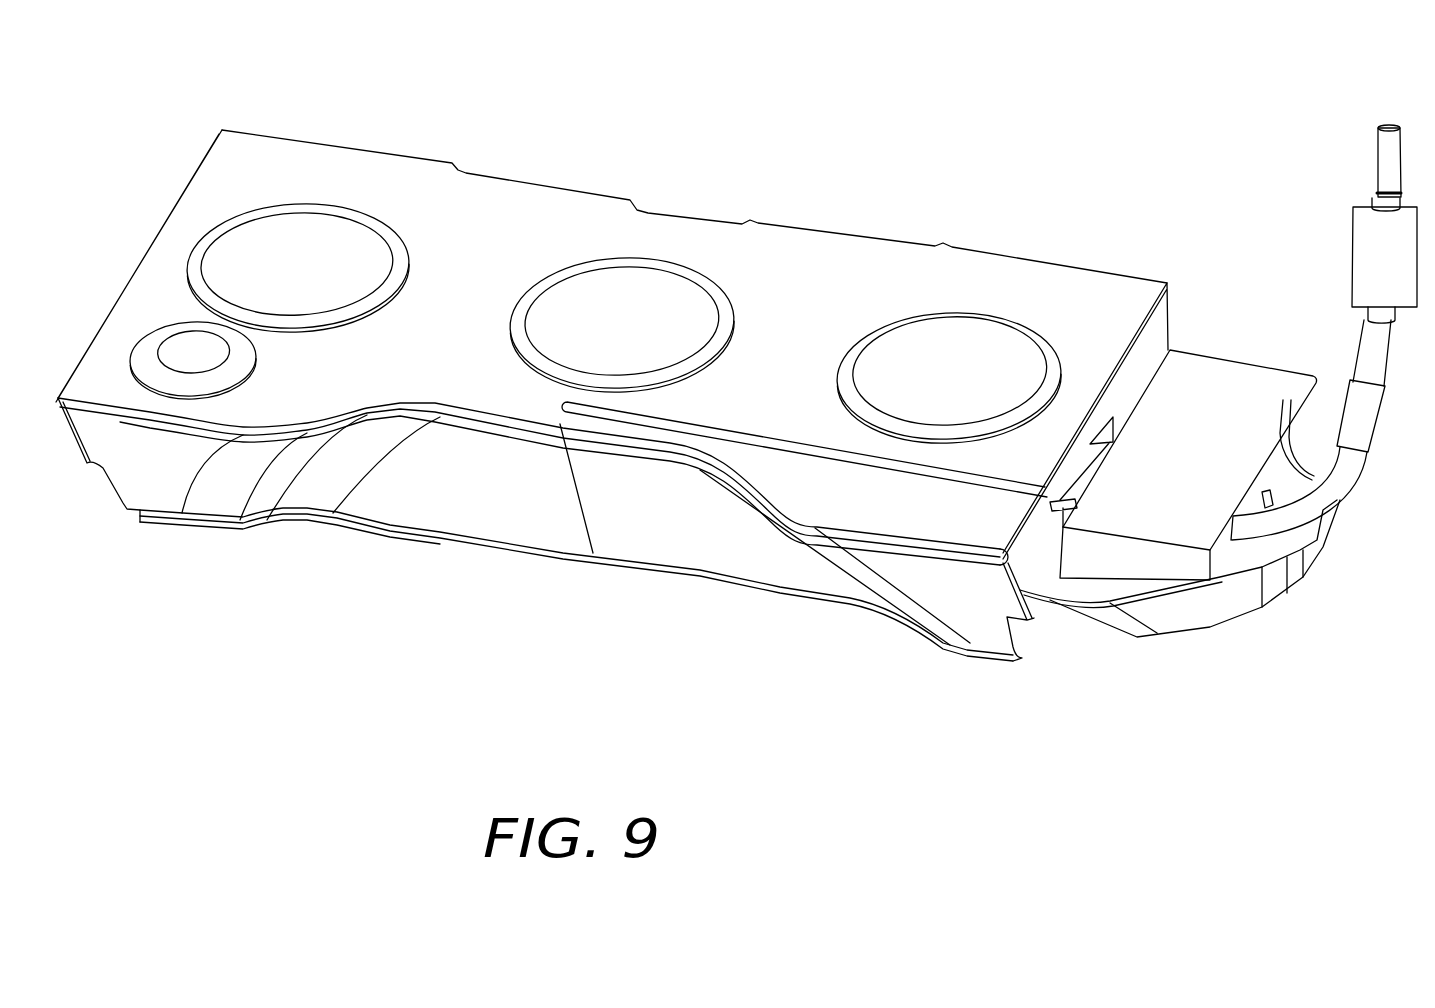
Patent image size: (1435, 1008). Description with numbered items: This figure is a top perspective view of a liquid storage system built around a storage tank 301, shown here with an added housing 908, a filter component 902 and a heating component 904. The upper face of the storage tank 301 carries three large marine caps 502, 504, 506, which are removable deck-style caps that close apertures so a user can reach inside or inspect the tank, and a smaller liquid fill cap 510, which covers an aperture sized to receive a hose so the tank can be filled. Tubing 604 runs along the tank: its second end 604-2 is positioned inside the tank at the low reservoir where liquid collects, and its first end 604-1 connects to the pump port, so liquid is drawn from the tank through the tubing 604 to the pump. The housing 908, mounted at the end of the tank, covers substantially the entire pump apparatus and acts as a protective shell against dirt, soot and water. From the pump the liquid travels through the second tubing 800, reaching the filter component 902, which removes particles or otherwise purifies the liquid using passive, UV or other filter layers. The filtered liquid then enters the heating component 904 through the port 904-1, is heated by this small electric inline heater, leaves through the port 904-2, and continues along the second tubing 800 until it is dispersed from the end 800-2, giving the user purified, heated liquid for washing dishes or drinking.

The storage tank 301 is at (1037, 282).
The marine cap 502 is at (318, 205).
The marine cap 504 is at (594, 258).
The marine cap 506 is at (910, 315).
The liquid fill cap 510 is at (153, 338).
The tubing 604 is at (887, 470).
The first end of the tubing 604-1 is at (1060, 535).
The second end of the tubing 604-2 is at (566, 410).
The second tubing 800 is at (1347, 483).
The end of the tubing 800-2 is at (1390, 125).
The filter component 902 is at (1345, 405).
The heating component 904 is at (1353, 257).
The port 904-1 is at (1368, 313).
The port 904-2 is at (1372, 197).
The housing 908 is at (1173, 545).